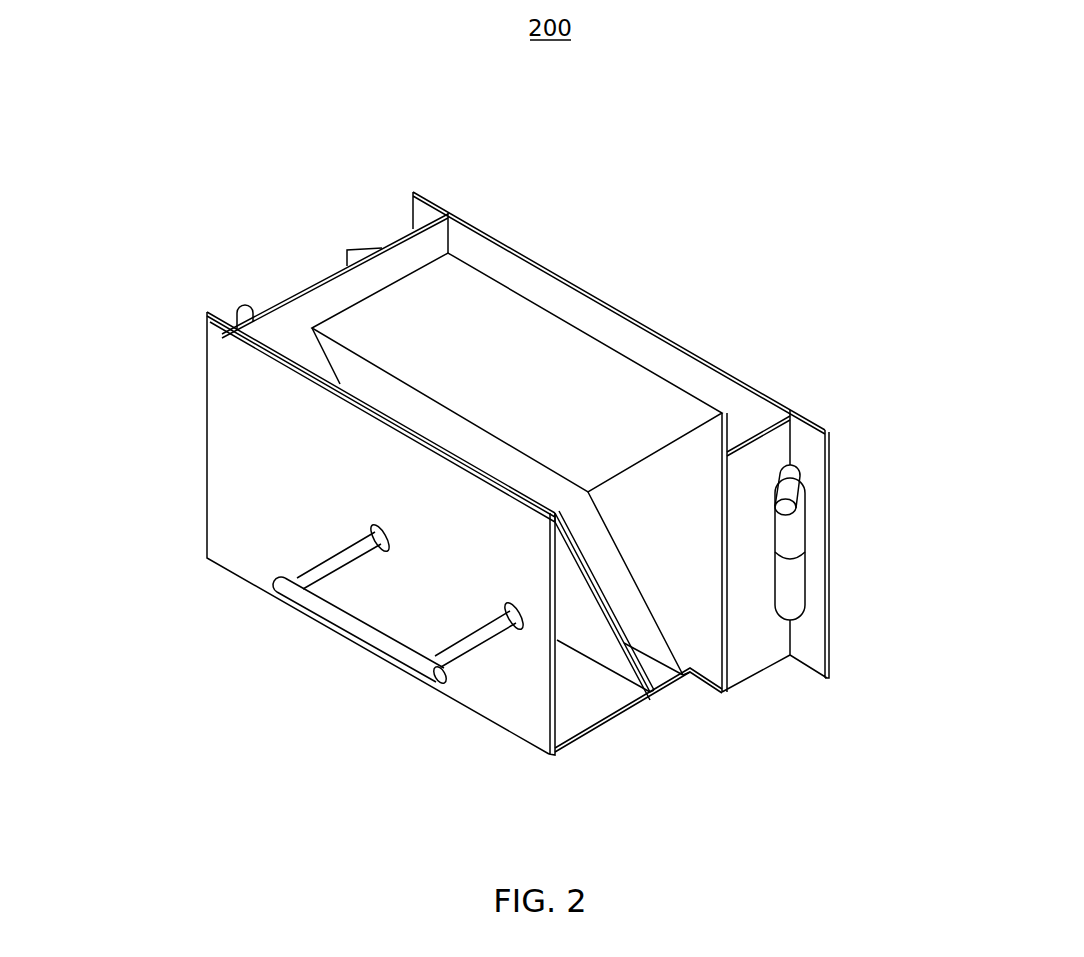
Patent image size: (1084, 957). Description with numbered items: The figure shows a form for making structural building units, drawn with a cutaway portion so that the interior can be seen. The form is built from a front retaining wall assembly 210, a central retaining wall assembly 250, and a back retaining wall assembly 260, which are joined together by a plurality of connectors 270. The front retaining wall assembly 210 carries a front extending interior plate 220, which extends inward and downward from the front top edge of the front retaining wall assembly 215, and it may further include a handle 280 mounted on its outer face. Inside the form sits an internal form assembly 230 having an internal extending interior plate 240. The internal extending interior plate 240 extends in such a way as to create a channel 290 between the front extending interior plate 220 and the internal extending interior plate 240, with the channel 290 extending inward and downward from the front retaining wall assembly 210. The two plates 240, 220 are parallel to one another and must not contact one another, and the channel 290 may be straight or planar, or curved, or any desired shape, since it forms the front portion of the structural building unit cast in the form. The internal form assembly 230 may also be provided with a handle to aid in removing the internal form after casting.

The front retaining wall assembly 210 is at (232, 522).
The front top edge of the front retaining wall assembly 215 is at (257, 347).
The front extending interior plate 220 is at (612, 628).
The internal form assembly 230 is at (594, 366).
The internal extending interior plate 240 is at (608, 517).
The central retaining wall assembly 250 is at (312, 278).
The back retaining wall assembly 260 is at (512, 240).
The connectors 270 is at (387, 238).
The handle 280 is at (303, 603).
The channel 290 is at (663, 672).